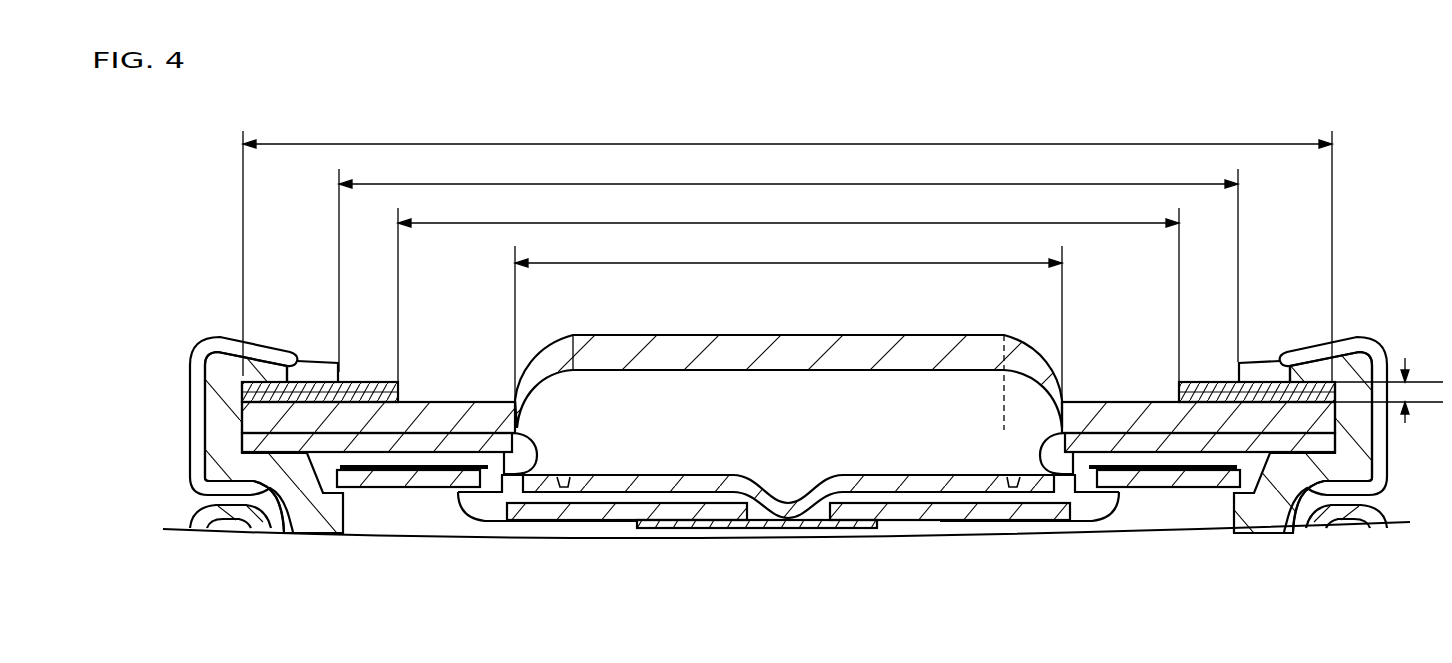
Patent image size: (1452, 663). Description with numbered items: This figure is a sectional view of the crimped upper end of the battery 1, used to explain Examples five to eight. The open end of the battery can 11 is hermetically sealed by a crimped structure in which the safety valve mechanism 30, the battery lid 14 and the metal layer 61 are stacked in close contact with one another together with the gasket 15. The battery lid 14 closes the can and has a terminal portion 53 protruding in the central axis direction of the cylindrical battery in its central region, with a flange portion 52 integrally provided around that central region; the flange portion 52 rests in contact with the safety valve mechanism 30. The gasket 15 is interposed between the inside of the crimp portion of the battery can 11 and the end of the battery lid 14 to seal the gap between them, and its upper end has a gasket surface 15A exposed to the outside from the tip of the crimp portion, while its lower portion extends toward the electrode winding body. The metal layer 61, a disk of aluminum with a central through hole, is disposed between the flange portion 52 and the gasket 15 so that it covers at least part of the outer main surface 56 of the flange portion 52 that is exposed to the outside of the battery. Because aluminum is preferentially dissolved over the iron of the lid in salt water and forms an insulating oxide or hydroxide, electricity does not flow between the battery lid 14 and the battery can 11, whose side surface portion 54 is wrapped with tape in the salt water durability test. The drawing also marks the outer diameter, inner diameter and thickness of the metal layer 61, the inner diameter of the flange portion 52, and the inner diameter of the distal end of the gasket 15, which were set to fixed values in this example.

The battery 1 is at (622, 98).
The battery can 11 is at (190, 467).
The battery lid 14 is at (633, 326).
The gasket 15 is at (225, 437).
The gasket surface 15A is at (306, 361).
The safety valve mechanism 30 is at (788, 470).
The flange portion 52 is at (462, 410).
The terminal portion 53 is at (720, 334).
The side surface portion 54 is at (197, 401).
The outer main surface 56 is at (423, 400).
The metal layer 61 is at (378, 381).